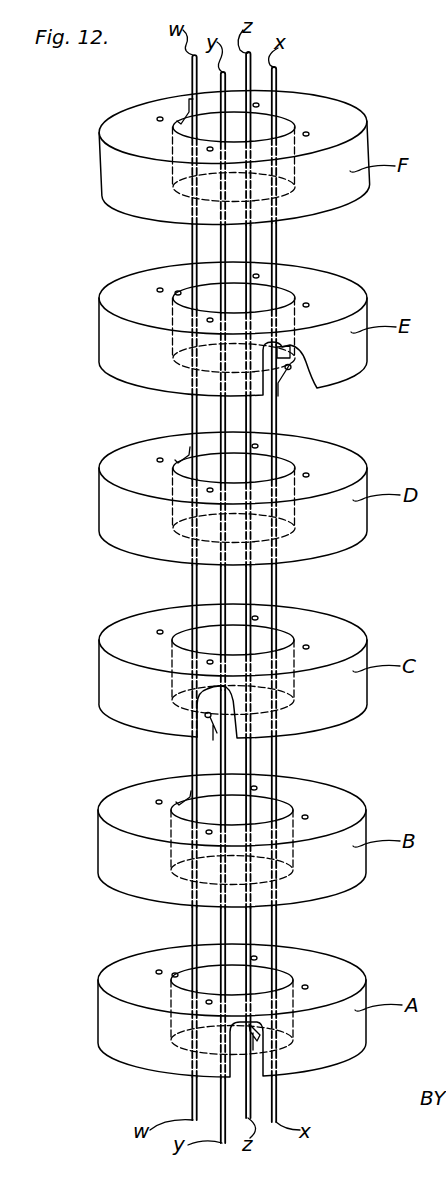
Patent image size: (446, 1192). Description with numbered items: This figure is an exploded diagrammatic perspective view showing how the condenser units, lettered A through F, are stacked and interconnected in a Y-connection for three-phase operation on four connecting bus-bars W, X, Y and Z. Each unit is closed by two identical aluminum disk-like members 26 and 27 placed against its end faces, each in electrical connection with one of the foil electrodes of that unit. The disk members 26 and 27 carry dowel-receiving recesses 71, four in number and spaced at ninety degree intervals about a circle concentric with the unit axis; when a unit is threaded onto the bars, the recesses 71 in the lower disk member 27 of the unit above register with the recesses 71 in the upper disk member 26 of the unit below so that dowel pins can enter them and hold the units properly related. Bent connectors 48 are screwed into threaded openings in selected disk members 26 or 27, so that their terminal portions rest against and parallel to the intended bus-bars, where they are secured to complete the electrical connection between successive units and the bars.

The disk-like member 26 is at (346, 124).
The disk-like member 27 is at (346, 210).
The dowel-receiving recess 71 is at (307, 132).
The connector 48 is at (189, 110).